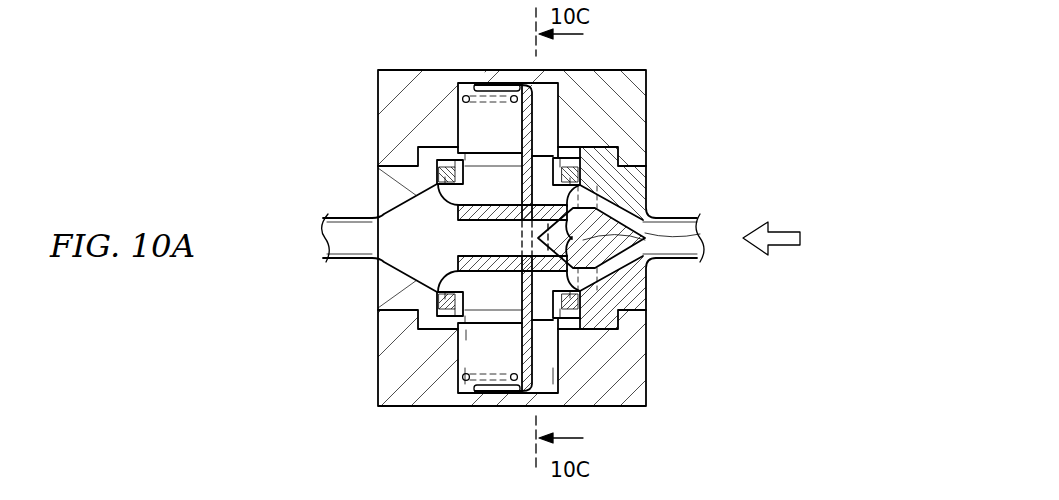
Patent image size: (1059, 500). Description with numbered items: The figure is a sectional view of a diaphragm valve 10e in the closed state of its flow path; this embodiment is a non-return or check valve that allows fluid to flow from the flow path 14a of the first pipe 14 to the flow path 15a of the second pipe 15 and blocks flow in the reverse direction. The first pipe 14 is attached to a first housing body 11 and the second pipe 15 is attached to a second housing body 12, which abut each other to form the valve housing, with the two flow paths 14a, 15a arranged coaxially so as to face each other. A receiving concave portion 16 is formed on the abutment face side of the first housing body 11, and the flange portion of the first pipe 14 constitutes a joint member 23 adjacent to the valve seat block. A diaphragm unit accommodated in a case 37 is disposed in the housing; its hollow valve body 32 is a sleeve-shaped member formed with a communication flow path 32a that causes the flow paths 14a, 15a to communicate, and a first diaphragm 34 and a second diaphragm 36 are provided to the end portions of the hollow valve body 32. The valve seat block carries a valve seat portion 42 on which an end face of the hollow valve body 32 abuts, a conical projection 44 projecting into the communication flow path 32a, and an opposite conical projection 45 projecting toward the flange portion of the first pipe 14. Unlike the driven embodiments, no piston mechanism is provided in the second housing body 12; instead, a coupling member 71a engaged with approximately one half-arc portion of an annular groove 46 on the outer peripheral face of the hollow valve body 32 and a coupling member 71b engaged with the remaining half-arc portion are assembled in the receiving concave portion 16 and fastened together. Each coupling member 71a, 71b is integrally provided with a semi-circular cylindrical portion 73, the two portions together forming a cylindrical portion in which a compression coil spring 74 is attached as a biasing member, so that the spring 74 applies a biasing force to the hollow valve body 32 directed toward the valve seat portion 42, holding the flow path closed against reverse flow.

The diaphragm valve 10e is at (678, 75).
The first housing body 11 is at (615, 345).
The second housing body 12 is at (397, 325).
The first pipe 14 is at (651, 212).
The flow path 14a is at (703, 219).
The second pipe 15 is at (320, 219).
The flow path 15a is at (340, 244).
The receiving concave portion 16 is at (558, 126).
The joint member 23 is at (622, 180).
The hollow valve body 32 is at (460, 258).
The communication flow path 32a is at (467, 221).
The first diaphragm 34 is at (638, 300).
The second diaphragm 36 is at (425, 196).
The case 37 is at (516, 302).
The valve seat portion 42 is at (645, 273).
The conical projection 44 is at (536, 240).
The conical projection 45 is at (702, 243).
The annular groove 46 is at (521, 197).
The coupling member 71a is at (532, 107).
The coupling member 71b is at (532, 369).
The semi-circular cylindrical portion 73 is at (470, 87).
The compression coil spring 74 is at (484, 364).